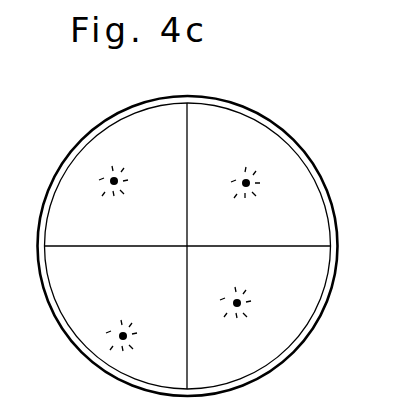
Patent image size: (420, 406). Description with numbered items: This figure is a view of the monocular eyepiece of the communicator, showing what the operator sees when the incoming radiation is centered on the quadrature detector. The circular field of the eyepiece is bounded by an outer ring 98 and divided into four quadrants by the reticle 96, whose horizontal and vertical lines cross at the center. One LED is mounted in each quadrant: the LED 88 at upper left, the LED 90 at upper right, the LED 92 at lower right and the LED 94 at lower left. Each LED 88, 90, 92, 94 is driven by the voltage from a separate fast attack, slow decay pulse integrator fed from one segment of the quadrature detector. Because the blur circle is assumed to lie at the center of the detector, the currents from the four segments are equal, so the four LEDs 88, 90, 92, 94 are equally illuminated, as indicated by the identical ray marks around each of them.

The LED 88 is at (114, 181).
The LED 90 is at (246, 183).
The LED 92 is at (237, 303).
The LED 94 is at (123, 336).
The reticle 96 is at (313, 245).
The housing ring 98 is at (285, 132).